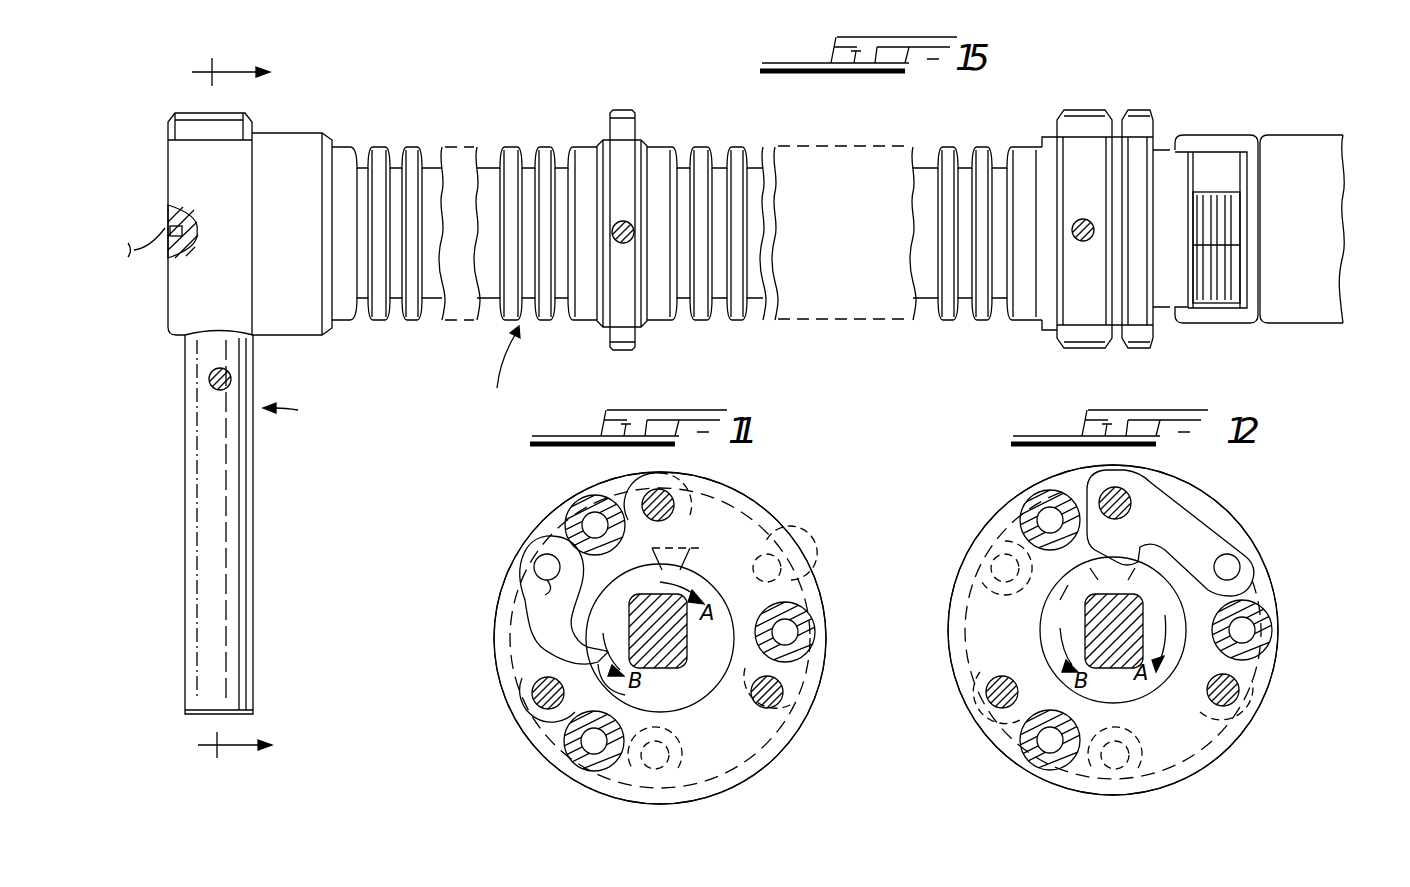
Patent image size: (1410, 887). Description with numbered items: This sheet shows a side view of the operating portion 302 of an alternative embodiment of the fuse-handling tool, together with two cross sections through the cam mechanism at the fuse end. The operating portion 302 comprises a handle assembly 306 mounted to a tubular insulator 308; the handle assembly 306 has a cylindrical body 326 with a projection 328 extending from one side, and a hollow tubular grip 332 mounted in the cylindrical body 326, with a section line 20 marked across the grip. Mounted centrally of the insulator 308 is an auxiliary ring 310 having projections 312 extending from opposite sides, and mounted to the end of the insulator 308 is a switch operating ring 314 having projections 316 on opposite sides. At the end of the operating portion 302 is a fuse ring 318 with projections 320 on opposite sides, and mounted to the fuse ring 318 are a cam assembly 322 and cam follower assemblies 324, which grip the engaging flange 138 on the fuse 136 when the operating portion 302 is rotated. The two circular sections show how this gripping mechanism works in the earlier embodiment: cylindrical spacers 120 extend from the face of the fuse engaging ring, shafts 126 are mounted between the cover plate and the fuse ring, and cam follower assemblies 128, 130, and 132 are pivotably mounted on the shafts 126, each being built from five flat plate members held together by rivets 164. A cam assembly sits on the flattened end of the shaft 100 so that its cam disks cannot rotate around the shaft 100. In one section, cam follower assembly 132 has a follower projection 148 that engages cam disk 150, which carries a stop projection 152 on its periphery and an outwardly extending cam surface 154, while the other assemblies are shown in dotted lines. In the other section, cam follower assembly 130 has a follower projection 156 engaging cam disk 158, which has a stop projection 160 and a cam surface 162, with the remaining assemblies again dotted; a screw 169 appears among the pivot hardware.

In FIG. 15, the section line 20 is at (215, 408).
In FIG. 11, the shaft 100 is at (680, 634).
In FIG. 12, the shaft 100 is at (1113, 666).
In FIG. 11, the cylindrical spacers 120 is at (596, 772).
In FIG. 12, the cylindrical spacers 120 is at (1260, 655).
In FIG. 11, the shafts 126 is at (536, 703).
In FIG. 12, the shafts 126 is at (1128, 498).
In FIG. 11, the cam follower assembly 128 is at (782, 740).
In FIG. 12, the cam follower assembly 128 is at (1215, 752).
In FIG. 11, the cam follower assembly 130 is at (757, 500).
In FIG. 12, the cam follower assembly 130 is at (1200, 502).
In FIG. 11, the cam follower assembly 132 is at (503, 627).
In FIG. 12, the cam follower assembly 132 is at (963, 673).
In FIG. 15, the fuse 136 is at (1332, 135).
In FIG. 15, the engaging flange 138 is at (1220, 135).
In FIG. 11, the follower projection 148 is at (592, 657).
In FIG. 11, the cam disk 150 is at (714, 596).
In FIG. 11, the stop projection 152 is at (646, 586).
In FIG. 11, the cam surface 154 is at (620, 692).
In FIG. 12, the follower projection 156 is at (1130, 562).
In FIG. 12, the cam disk 158 is at (1182, 618).
In FIG. 12, the stop projection 160 is at (1128, 582).
In FIG. 12, the cam surface 162 is at (1059, 601).
In FIG. 11, the rivets 164 is at (781, 565).
In FIG. 11, the screw 169 is at (539, 588).
In FIG. 15, the operating portion 302 is at (495, 373).
In FIG. 15, the handle assembly 306 is at (301, 411).
In FIG. 15, the tubular insulator 308 is at (393, 147).
In FIG. 15, the auxiliary ring 310 is at (650, 140).
In FIG. 15, the projections 312 is at (633, 110).
In FIG. 15, the switch operating ring 314 is at (1072, 150).
In FIG. 15, the projections 316 is at (1090, 112).
In FIG. 15, the fuse ring 318 is at (1135, 155).
In FIG. 15, the projections 320 is at (1140, 112).
In FIG. 15, the cam assembly 322 is at (1232, 195).
In FIG. 15, the cam follower assemblies 324 is at (1228, 300).
In FIG. 15, the cylindrical body 326 is at (289, 133).
In FIG. 15, the projection 328 is at (236, 112).
In FIG. 15, the hollow tubular grip 332 is at (253, 590).